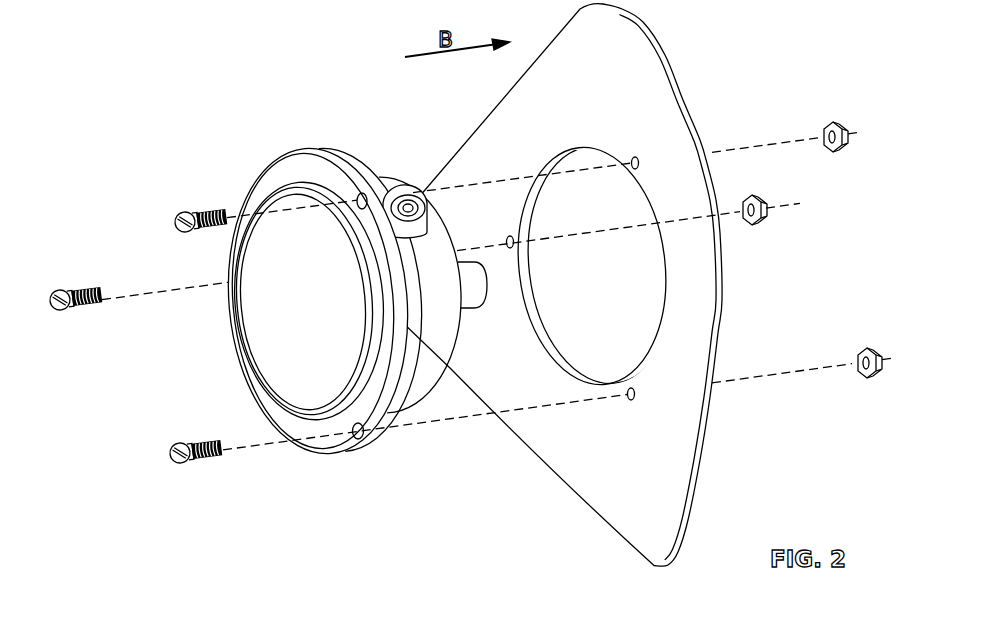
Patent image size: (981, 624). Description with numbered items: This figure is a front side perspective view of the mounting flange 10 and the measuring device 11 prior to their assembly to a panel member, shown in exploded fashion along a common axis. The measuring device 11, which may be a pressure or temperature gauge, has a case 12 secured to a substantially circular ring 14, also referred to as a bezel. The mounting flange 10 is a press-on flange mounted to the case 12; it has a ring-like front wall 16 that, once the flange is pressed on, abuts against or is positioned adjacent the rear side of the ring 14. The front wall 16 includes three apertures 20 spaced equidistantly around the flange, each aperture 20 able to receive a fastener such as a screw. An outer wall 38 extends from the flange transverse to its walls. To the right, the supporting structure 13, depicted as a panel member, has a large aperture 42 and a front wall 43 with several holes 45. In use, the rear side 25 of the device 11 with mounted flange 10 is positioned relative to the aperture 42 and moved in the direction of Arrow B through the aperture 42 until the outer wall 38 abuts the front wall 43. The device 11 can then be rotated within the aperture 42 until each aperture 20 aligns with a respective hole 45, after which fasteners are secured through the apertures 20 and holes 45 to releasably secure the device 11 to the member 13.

The mounting flange 10 is at (279, 151).
The measuring device 11 is at (394, 169).
The case 12 is at (429, 357).
The supporting structure 13 is at (602, 483).
The ring 14 is at (312, 187).
The front wall 16 is at (333, 445).
The aperture 20 is at (357, 452).
The rear side 25 is at (428, 145).
The outer wall 38 is at (333, 153).
The aperture 42 is at (636, 327).
The front wall 43 is at (619, 79).
The hole 45 is at (642, 162).